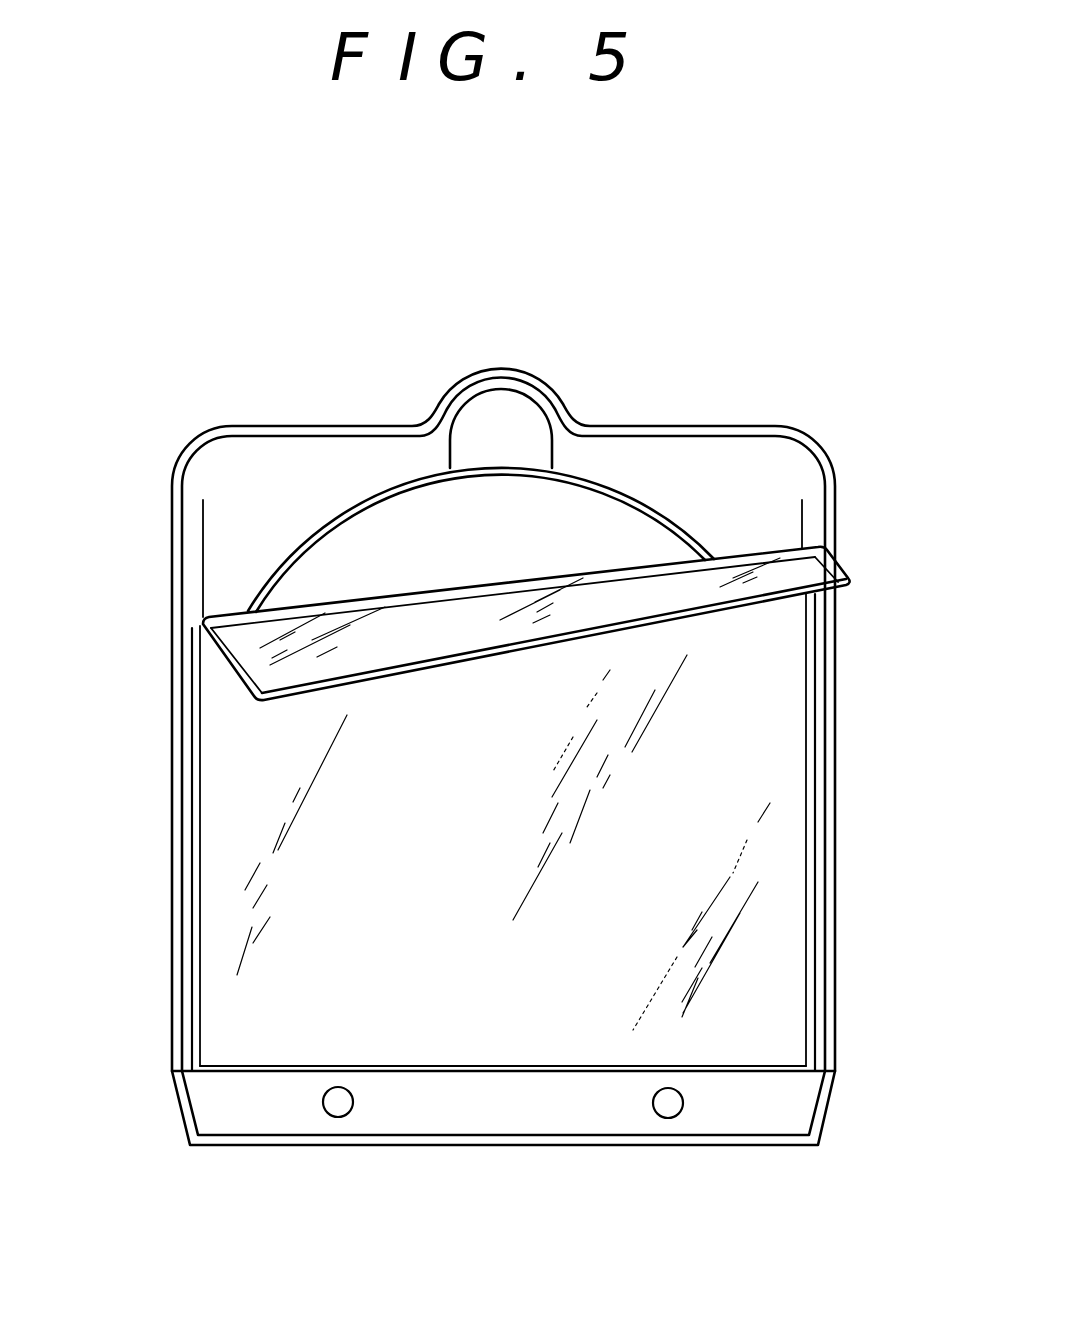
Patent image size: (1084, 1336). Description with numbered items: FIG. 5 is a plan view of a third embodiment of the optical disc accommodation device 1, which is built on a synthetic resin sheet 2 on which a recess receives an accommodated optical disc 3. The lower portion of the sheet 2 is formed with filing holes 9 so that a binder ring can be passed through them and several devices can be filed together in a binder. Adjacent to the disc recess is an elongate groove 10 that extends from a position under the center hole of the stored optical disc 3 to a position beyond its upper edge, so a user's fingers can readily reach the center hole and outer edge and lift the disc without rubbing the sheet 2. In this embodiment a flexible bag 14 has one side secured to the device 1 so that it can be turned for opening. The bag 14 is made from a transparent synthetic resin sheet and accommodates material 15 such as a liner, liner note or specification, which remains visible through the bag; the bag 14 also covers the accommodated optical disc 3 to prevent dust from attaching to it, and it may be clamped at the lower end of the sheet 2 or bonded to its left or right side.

The optical disc accommodation device 1 is at (715, 393).
The synthetic resin sheet 2 is at (307, 465).
The optical disc 3 is at (407, 483).
The filing holes 9 is at (333, 1105).
The elongate groove 10 is at (549, 443).
The flexible bag 14 is at (707, 868).
The material 15 is at (335, 852).